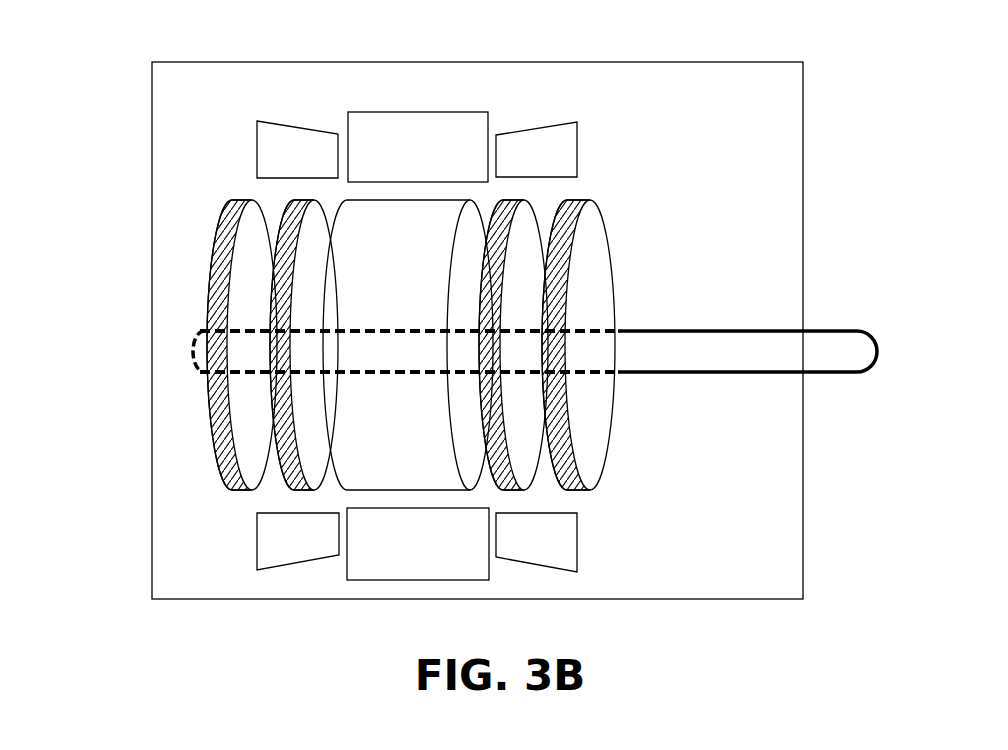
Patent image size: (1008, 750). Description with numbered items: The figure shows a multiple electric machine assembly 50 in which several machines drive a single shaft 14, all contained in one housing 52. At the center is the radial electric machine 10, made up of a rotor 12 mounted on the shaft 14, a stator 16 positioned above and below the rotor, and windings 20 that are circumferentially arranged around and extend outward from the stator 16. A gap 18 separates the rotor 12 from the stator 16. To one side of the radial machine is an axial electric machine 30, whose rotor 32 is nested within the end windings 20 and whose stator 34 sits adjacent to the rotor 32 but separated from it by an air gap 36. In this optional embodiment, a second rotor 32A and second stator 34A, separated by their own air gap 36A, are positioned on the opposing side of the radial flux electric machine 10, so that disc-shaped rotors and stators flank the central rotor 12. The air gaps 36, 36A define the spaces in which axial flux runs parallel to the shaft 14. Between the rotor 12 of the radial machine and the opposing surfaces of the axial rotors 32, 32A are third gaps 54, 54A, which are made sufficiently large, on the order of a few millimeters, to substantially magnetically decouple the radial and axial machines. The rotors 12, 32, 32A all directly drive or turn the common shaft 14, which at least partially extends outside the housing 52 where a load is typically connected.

The radial electric machine 10 is at (385, 103).
The rotor 12 is at (394, 362).
The shaft 14 is at (838, 332).
The stator 16 is at (407, 159).
The gap 18 is at (440, 193).
The windings 20 is at (285, 130).
The axial electric machine 30 is at (680, 483).
The rotor 32 is at (518, 260).
The second rotor 32A is at (216, 356).
The stator 34 is at (615, 321).
The second stator 34A is at (185, 326).
The air gap 36 is at (548, 207).
The air gap 36A is at (278, 207).
The multiple electric machine assembly 50 is at (105, 567).
The housing 52 is at (803, 91).
The third gap 54 is at (495, 200).
The third gap 54A is at (333, 487).